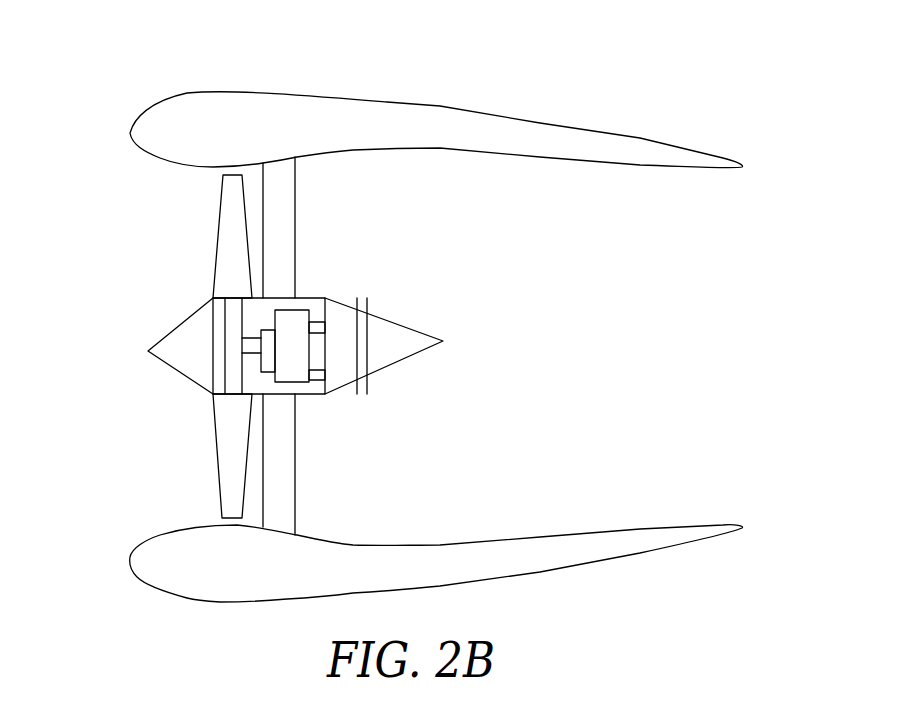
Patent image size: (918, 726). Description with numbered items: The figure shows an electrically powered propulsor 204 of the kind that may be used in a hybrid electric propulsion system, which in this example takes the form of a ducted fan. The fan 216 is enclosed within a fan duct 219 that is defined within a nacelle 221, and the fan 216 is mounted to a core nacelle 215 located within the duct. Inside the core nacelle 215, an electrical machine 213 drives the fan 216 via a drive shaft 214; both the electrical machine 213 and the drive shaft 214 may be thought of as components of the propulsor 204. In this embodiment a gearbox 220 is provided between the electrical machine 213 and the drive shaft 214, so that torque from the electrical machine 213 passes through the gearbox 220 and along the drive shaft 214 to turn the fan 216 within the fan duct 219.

The propulsor 204 is at (124, 245).
The electrical machine 213 is at (297, 367).
The drive shaft 214 is at (257, 334).
The core nacelle 215 is at (407, 318).
The fan 216 is at (227, 442).
The fan duct 219 is at (295, 193).
The gearbox 220 is at (242, 361).
The nacelle 221 is at (272, 104).